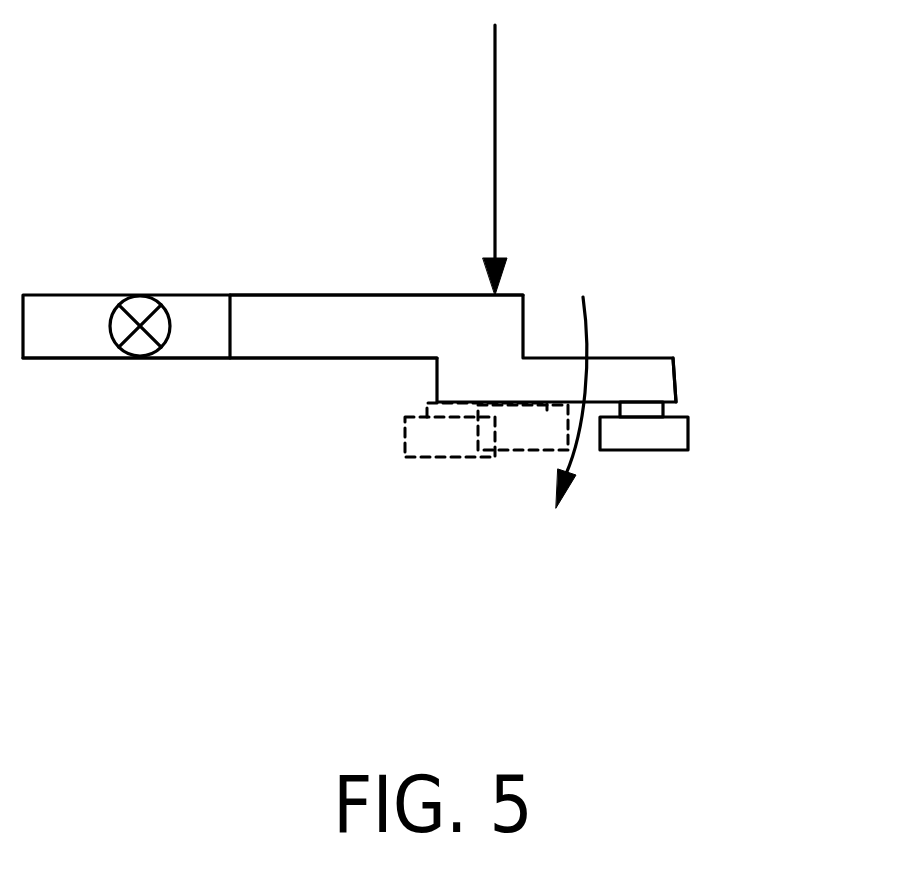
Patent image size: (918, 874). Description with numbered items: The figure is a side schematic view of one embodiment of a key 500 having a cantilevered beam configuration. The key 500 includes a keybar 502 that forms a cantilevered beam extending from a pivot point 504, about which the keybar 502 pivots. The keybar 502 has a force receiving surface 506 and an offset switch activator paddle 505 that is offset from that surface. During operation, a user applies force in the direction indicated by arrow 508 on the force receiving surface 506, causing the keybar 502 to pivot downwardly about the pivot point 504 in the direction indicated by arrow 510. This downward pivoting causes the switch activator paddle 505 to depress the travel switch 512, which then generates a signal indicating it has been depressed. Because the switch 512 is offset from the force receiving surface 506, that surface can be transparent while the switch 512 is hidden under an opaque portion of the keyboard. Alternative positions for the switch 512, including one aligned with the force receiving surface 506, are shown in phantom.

The key 500 is at (349, 278).
The keybar 502 is at (230, 391).
The pivot point 504 is at (126, 255).
The switch activator paddle 505 is at (744, 326).
The force receiving surface 506 is at (376, 242).
The arrow indicating direction of applied force 508 is at (532, 160).
The arrow indicating direction of downward pivoting 510 is at (614, 363).
The travel switch 512 is at (581, 480).